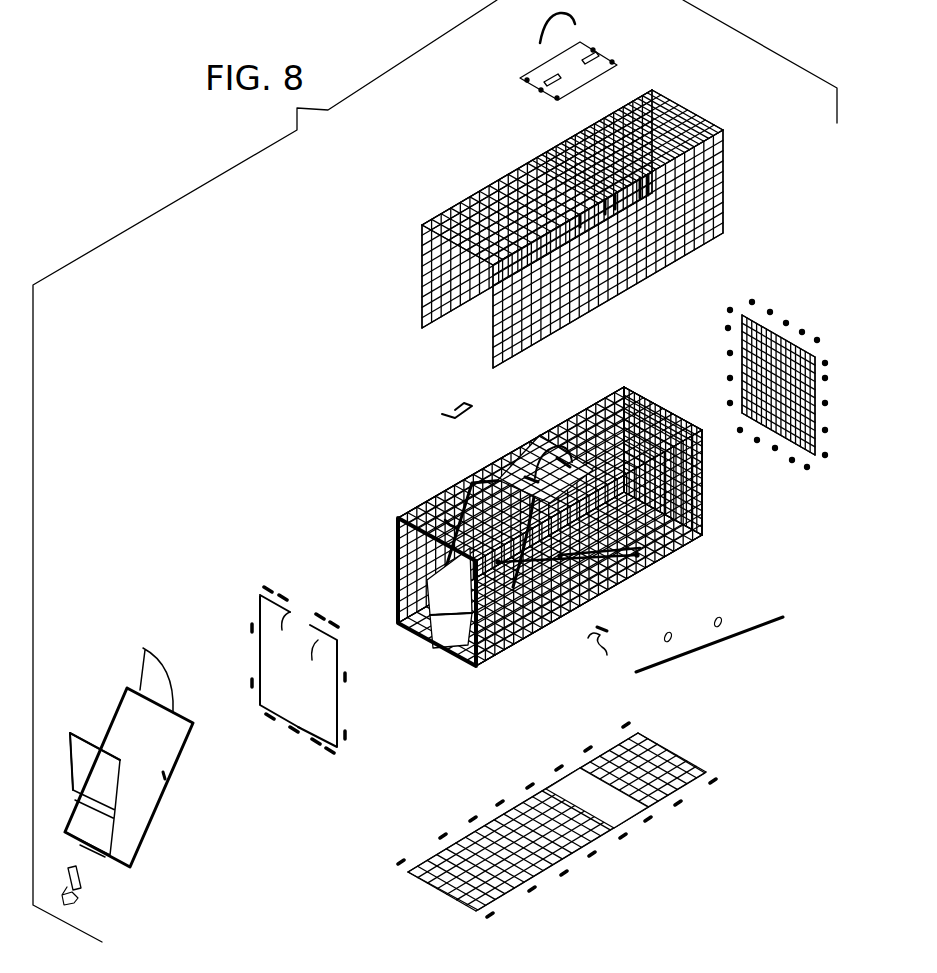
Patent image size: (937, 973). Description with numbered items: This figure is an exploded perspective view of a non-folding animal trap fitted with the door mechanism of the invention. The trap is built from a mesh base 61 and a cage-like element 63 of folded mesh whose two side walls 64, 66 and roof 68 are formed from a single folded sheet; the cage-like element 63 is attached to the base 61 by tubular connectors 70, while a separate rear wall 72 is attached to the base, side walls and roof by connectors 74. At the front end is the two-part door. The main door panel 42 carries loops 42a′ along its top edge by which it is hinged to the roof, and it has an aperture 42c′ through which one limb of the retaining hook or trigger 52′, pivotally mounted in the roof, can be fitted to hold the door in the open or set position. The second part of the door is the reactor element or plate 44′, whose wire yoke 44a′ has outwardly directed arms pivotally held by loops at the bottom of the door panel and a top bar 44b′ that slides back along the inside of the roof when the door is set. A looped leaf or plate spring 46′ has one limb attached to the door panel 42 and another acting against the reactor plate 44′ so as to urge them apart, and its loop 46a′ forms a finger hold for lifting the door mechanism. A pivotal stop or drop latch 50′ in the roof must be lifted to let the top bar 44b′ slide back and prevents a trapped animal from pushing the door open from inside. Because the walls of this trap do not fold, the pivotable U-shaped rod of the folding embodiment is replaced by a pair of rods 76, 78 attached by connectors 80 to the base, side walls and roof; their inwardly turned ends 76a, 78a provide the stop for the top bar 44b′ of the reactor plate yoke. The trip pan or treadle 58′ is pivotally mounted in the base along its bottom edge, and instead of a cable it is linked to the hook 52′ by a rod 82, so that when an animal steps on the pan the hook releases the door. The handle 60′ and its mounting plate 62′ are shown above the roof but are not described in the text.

The main door panel 42 is at (150, 800).
The loops 42a′ is at (142, 688).
The aperture 42c′ is at (173, 778).
The reactor element or plate 44′ is at (110, 825).
The wire yoke 44a′ is at (73, 760).
The top bar 44b′ is at (90, 743).
The looped leaf or plate spring 46′ is at (80, 880).
The loop 46a′ is at (73, 905).
The pivotal stop or drop latch 50′ is at (450, 410).
The retaining hook or trigger 52′ is at (607, 653).
The trip pan or treadle 58′ is at (577, 782).
The carrying handle 60′ is at (545, 22).
The mesh base 61 is at (452, 897).
The handle mounting plate 62′ is at (535, 74).
The cage-like element 63 is at (470, 192).
The side wall 64 is at (422, 280).
The side wall 66 is at (493, 327).
The roof 68 is at (568, 175).
The tubular connectors 70 is at (400, 860).
The rear wall 72 is at (818, 395).
The connectors 74 is at (802, 332).
The rod 76 is at (398, 576).
The inwardly turned end 76a is at (277, 630).
The rod 78 is at (497, 640).
The inwardly turned end 78a is at (310, 642).
The connectors 80 is at (332, 622).
The rod 82 is at (596, 588).